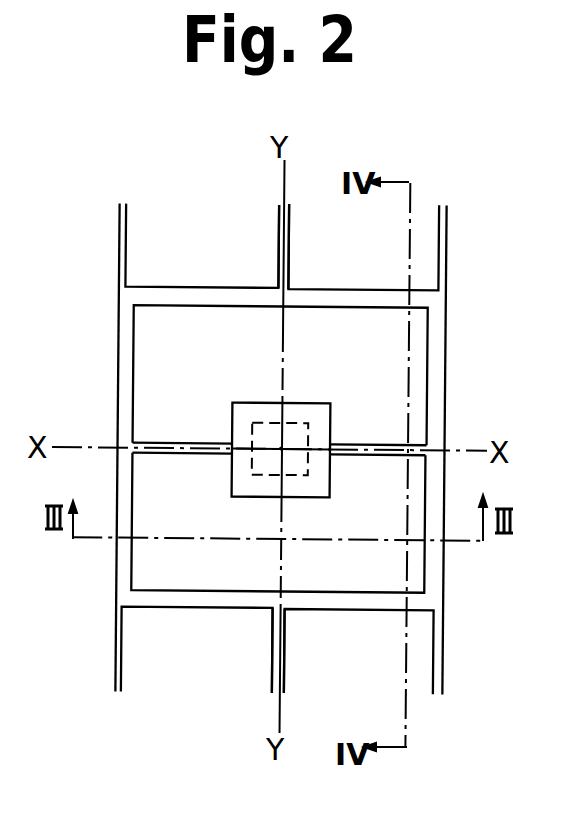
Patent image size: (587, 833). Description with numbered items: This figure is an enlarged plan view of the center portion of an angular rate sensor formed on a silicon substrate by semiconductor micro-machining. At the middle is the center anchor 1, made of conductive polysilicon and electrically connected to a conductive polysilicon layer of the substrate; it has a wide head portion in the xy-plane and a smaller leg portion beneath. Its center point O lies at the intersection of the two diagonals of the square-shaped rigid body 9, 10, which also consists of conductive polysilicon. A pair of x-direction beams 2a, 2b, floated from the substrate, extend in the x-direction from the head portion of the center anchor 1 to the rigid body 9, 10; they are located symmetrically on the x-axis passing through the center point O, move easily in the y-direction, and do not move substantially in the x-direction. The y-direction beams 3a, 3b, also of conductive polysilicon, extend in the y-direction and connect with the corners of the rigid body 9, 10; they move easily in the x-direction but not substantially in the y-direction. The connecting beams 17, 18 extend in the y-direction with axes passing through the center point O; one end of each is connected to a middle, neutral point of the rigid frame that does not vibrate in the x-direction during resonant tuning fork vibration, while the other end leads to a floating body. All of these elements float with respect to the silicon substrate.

The center anchor 1 is at (320, 401).
The x-direction beam 2a is at (178, 443).
The x-direction beam 2b is at (367, 443).
The y-direction beam 3a is at (127, 237).
The y-direction beam 3b is at (446, 237).
The rigid body 9 is at (330, 288).
The rigid body 10 is at (218, 607).
The connecting beam 17 is at (275, 237).
The connecting beam 18 is at (273, 668).
The center point O is at (281, 448).